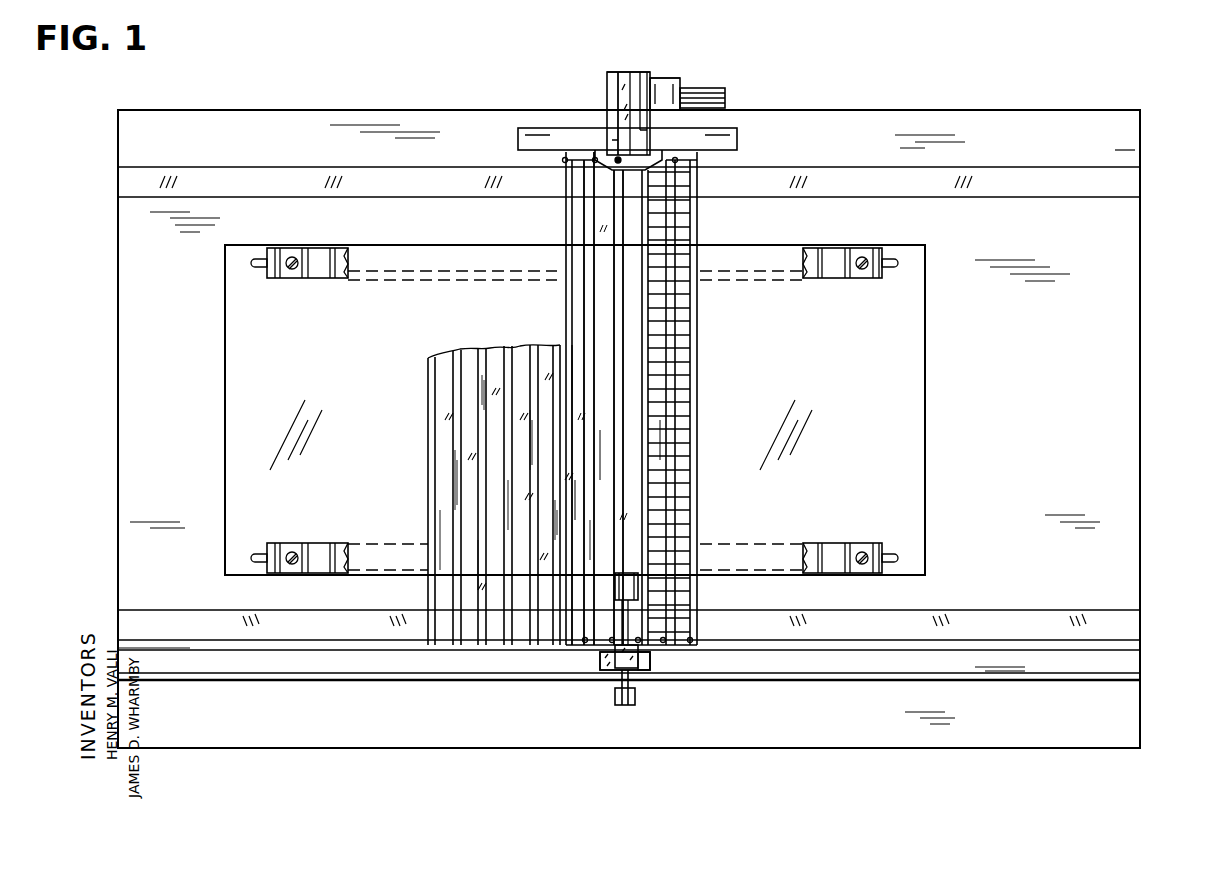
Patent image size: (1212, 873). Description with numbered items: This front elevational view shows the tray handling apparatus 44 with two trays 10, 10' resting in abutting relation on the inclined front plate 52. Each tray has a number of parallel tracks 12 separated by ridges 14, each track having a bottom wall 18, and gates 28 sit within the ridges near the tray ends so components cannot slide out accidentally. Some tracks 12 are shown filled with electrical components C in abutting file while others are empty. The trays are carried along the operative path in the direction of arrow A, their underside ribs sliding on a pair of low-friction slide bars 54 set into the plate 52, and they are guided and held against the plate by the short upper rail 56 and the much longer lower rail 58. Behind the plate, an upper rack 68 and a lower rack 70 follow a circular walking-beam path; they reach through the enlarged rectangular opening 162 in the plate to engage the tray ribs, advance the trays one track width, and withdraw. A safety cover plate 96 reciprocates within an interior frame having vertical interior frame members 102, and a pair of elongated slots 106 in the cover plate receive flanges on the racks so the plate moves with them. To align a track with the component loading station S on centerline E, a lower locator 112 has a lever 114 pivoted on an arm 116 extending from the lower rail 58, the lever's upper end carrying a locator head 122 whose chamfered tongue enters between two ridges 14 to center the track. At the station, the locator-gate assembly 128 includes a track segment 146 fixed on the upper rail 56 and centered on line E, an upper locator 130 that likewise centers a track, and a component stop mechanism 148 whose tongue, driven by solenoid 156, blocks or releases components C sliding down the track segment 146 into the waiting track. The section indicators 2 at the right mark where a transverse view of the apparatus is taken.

The tray 10 is at (629, 398).
The tray 10' is at (466, 495).
The track 12 is at (580, 322).
The ridge 14 is at (590, 305).
The bottom wall 18 is at (578, 342).
The gate 28 is at (562, 163).
The tray handling apparatus 44 is at (100, 337).
The front plate 52 is at (1125, 420).
The slide bar 54 is at (128, 188).
The upper rail 56 is at (520, 146).
The lower rail 58 is at (963, 672).
The upper rack 68 is at (812, 282).
The lower rack 70 is at (862, 542).
The cover plate 96 is at (915, 372).
The vertical interior frame member 102 is at (920, 457).
The slot 106 is at (256, 270).
The lower locator 112 is at (595, 652).
The lever 114 is at (618, 686).
The arm 116 is at (650, 662).
The locator head 122 is at (617, 590).
The locator-gate assembly 128 is at (600, 100).
The upper locator 130 is at (604, 170).
The track segment 146 is at (620, 72).
The component stop mechanism 148 is at (684, 70).
The solenoid 156 is at (720, 90).
The rectangular opening 162 is at (925, 497).
The section line 2- 2 is at (1050, 60).
The arrow A is at (713, 225).
The electrical component C is at (698, 392).
The centerline E is at (678, 76).
The component loading station S is at (600, 66).